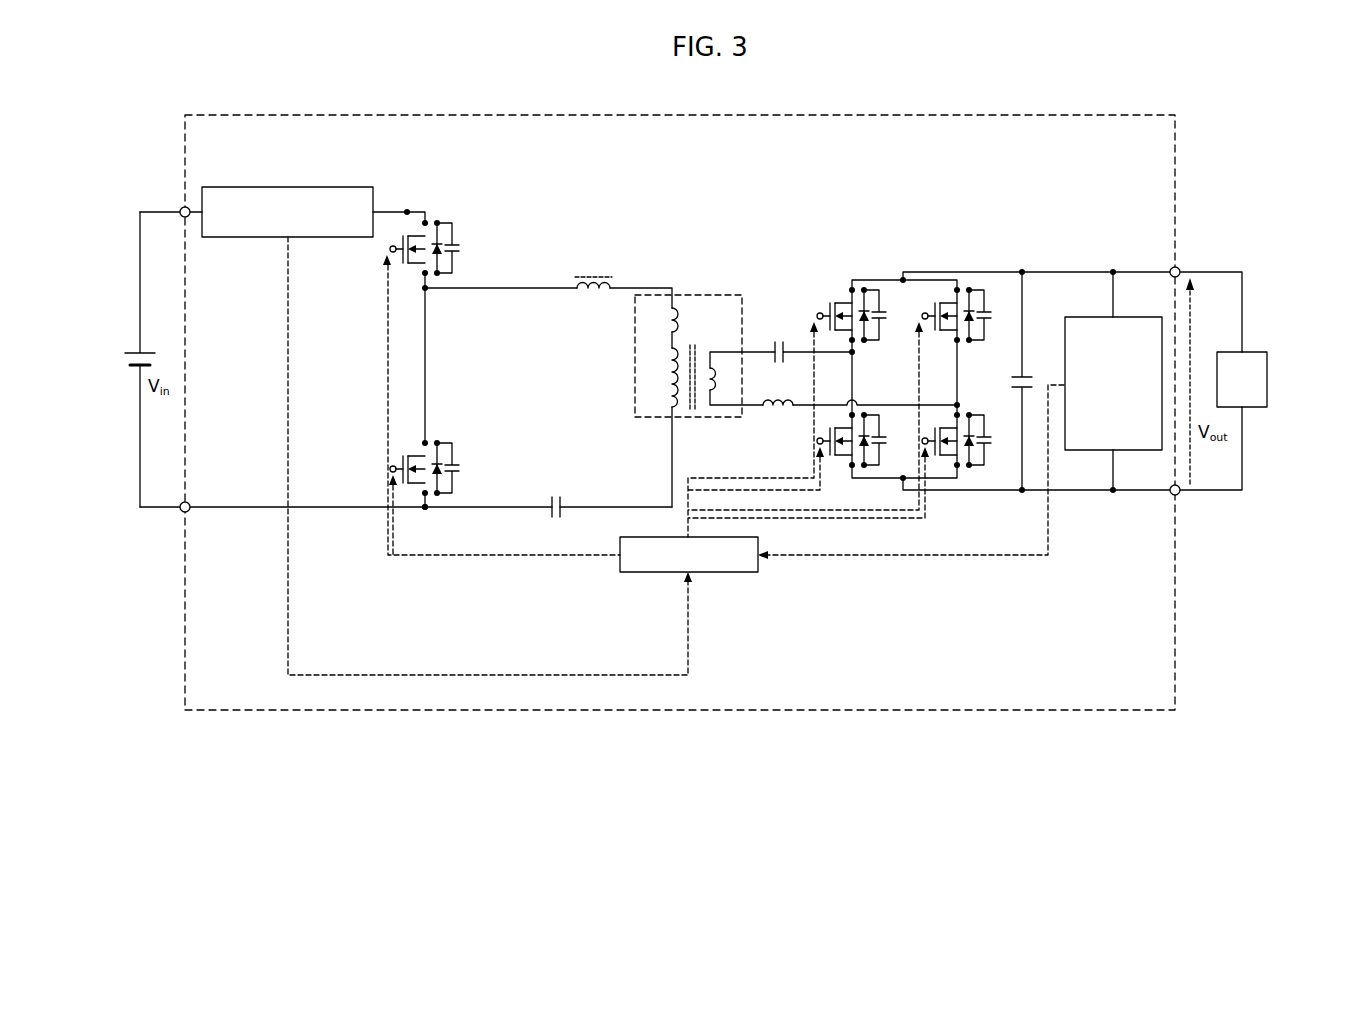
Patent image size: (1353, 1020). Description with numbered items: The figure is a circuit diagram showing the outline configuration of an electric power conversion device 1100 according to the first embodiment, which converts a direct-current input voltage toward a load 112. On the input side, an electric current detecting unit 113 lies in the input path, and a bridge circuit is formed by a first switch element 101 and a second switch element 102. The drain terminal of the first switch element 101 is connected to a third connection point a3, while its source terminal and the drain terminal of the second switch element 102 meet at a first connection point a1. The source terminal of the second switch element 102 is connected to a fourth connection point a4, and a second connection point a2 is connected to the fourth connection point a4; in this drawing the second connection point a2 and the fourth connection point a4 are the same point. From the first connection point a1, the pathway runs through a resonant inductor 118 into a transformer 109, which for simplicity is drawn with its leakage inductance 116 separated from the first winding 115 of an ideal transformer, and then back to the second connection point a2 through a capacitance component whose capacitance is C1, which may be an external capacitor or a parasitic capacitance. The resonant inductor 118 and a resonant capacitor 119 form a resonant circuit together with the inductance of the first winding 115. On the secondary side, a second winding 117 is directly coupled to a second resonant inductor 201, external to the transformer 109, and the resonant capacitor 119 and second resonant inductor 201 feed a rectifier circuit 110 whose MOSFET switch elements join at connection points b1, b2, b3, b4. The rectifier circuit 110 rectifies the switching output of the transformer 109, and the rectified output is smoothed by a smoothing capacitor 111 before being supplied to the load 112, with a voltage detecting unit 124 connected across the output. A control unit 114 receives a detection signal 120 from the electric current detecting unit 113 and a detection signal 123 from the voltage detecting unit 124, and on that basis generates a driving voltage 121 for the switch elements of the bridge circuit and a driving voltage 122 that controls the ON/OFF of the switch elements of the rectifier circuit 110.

The electric power conversion device 1100 is at (1003, 115).
The electric current detecting unit 113 is at (292, 187).
The first switch element 101 is at (410, 233).
The second switch element 102 is at (404, 497).
The first connection point a1 is at (427, 291).
The second connection point a2 is at (425, 507).
The third connection point a3 is at (409, 211).
The fourth connection point a4 is at (439, 510).
The capacitance of capacitance component C1 is at (556, 495).
The resonant inductor 118 is at (599, 275).
The transformer 109 is at (710, 295).
The leakage inductance 116 is at (668, 320).
The first winding 115 is at (668, 386).
The second winding 117 is at (711, 418).
The resonant capacitor 119 is at (778, 341).
The second resonant inductor 201 is at (776, 410).
The rectifier circuit 110 is at (900, 348).
The connection point b1 is at (855, 356).
The connection point b2 is at (960, 404).
The connection point b3 is at (901, 279).
The connection point b4 is at (901, 480).
The smoothing capacitor 111 is at (1024, 375).
The voltage detecting unit 124 is at (1115, 316).
The load 112 is at (1248, 351).
The control unit 114 is at (729, 574).
The detection signal 120 is at (467, 673).
The driving voltage 121 is at (558, 557).
The driving voltage 122 is at (686, 518).
The detection signal 123 is at (905, 557).